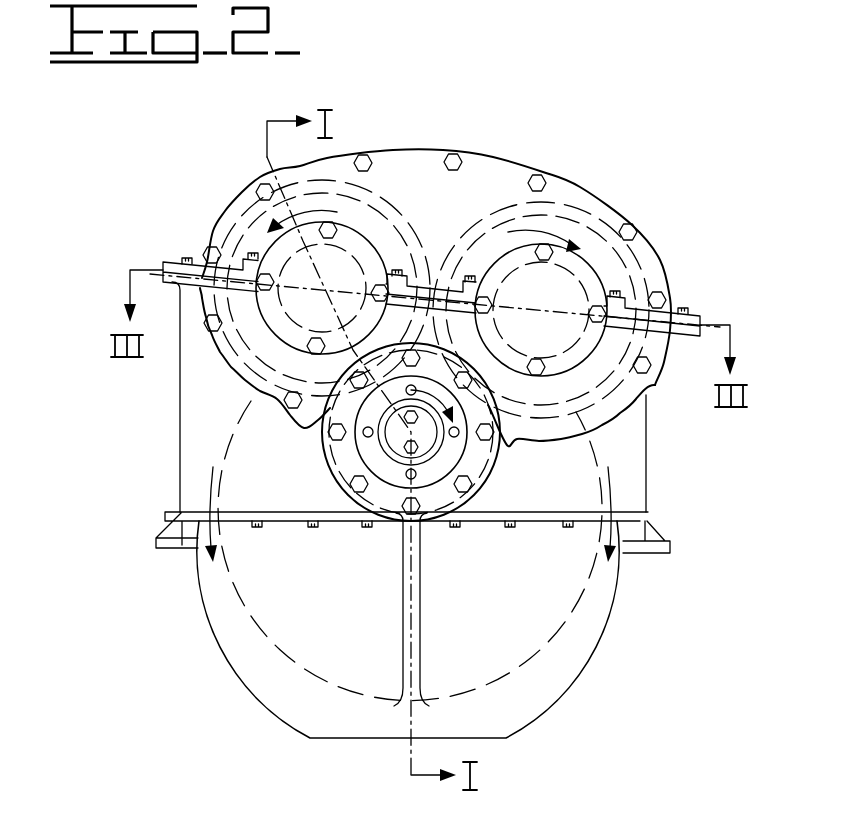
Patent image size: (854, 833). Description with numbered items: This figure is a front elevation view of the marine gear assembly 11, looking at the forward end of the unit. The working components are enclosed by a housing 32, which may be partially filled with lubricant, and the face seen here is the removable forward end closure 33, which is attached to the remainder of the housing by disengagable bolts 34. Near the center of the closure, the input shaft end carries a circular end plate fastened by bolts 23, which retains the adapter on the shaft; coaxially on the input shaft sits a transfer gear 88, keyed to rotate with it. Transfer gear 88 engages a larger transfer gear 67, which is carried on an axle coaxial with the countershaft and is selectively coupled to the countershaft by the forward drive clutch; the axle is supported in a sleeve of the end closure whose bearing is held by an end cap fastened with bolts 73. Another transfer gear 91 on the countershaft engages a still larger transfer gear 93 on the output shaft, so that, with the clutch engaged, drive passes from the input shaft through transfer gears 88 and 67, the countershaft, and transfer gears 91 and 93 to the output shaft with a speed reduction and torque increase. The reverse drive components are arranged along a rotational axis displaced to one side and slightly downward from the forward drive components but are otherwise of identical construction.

The marine gear assembly 11 is at (583, 82).
The bolts 23 is at (403, 455).
The housing 32 is at (666, 522).
The forward end closure 33 is at (567, 192).
The bolts 34 is at (634, 234).
The transfer gear 67 is at (380, 192).
The bolts 73 is at (282, 312).
The transfer gear 88 is at (416, 482).
The transfer gear 91 is at (338, 347).
The transfer gear 93 is at (248, 613).